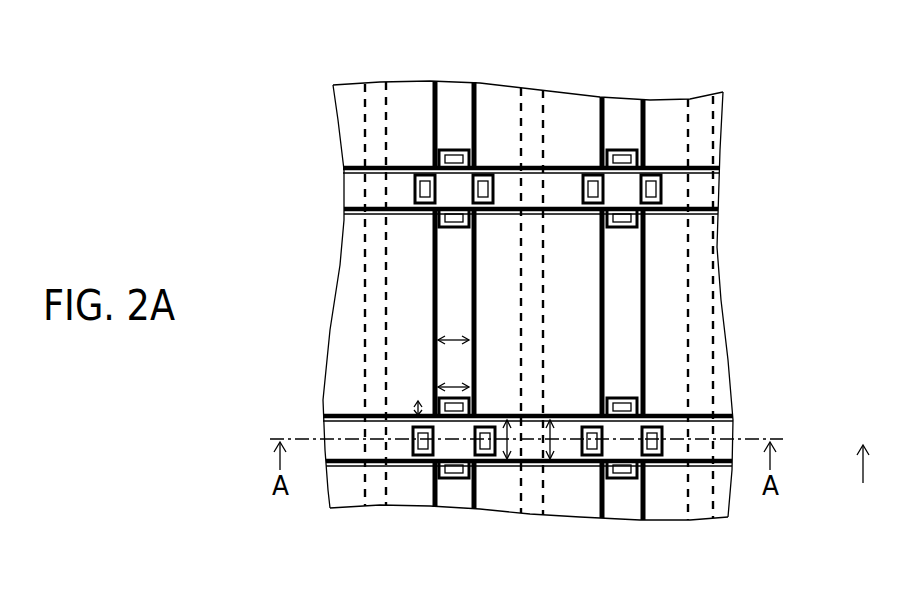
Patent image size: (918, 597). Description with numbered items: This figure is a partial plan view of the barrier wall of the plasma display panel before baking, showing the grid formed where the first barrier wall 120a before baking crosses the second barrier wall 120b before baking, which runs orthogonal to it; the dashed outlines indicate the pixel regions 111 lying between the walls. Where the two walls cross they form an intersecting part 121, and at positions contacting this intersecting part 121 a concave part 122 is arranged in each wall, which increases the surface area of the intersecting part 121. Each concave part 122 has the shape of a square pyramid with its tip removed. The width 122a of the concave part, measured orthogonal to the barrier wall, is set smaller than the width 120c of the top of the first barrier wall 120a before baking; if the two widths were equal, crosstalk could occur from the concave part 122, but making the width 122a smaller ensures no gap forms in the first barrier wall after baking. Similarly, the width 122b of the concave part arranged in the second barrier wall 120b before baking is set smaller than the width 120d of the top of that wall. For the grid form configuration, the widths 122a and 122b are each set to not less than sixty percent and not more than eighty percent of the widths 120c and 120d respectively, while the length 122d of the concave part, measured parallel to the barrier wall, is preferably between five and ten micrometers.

The pixel 111 is at (530, 100).
The first barrier wall before baking 120a is at (633, 132).
The second barrier wall before baking 120b is at (675, 189).
The width of the top of first barrier wall before baking 120c is at (437, 340).
The width of the top of second barrier wall before baking 120d is at (552, 445).
The intersecting part 121 is at (622, 185).
The concave part 122 is at (483, 453).
The width of the concave part 122a is at (437, 387).
The width of the concave part 122b is at (509, 437).
The length of concave part 122d is at (416, 405).